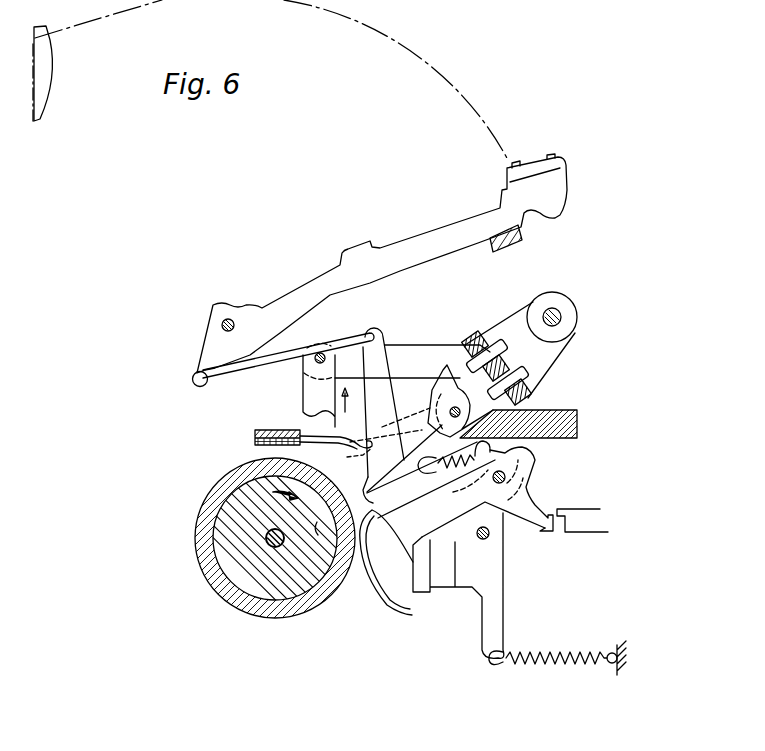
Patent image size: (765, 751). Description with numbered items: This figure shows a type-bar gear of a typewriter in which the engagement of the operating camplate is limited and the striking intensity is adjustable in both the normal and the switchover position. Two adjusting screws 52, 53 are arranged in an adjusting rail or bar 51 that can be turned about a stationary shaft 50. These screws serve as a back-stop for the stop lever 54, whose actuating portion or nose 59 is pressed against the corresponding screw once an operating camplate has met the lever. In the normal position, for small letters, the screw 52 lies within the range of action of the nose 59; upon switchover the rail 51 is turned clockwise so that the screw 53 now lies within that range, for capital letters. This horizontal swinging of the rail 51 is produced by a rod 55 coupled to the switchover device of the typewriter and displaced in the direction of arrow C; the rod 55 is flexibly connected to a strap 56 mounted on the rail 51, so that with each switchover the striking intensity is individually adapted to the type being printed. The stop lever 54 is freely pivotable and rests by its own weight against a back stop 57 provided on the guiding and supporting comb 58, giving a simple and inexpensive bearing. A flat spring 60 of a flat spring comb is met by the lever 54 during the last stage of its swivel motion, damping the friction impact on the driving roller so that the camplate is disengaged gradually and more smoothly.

The stationary shaft 50 is at (563, 313).
The adjusting rail or bar 51 is at (532, 400).
The adjusting screw 52 is at (490, 350).
The adjusting screw 53 is at (525, 375).
The stop lever 54 is at (408, 442).
The rod 55 is at (316, 399).
The strap 56 is at (406, 355).
The back stop 57 is at (492, 461).
The guiding and supporting comb 58 is at (560, 440).
The nose 59 is at (445, 365).
The flat spring 60 is at (342, 445).